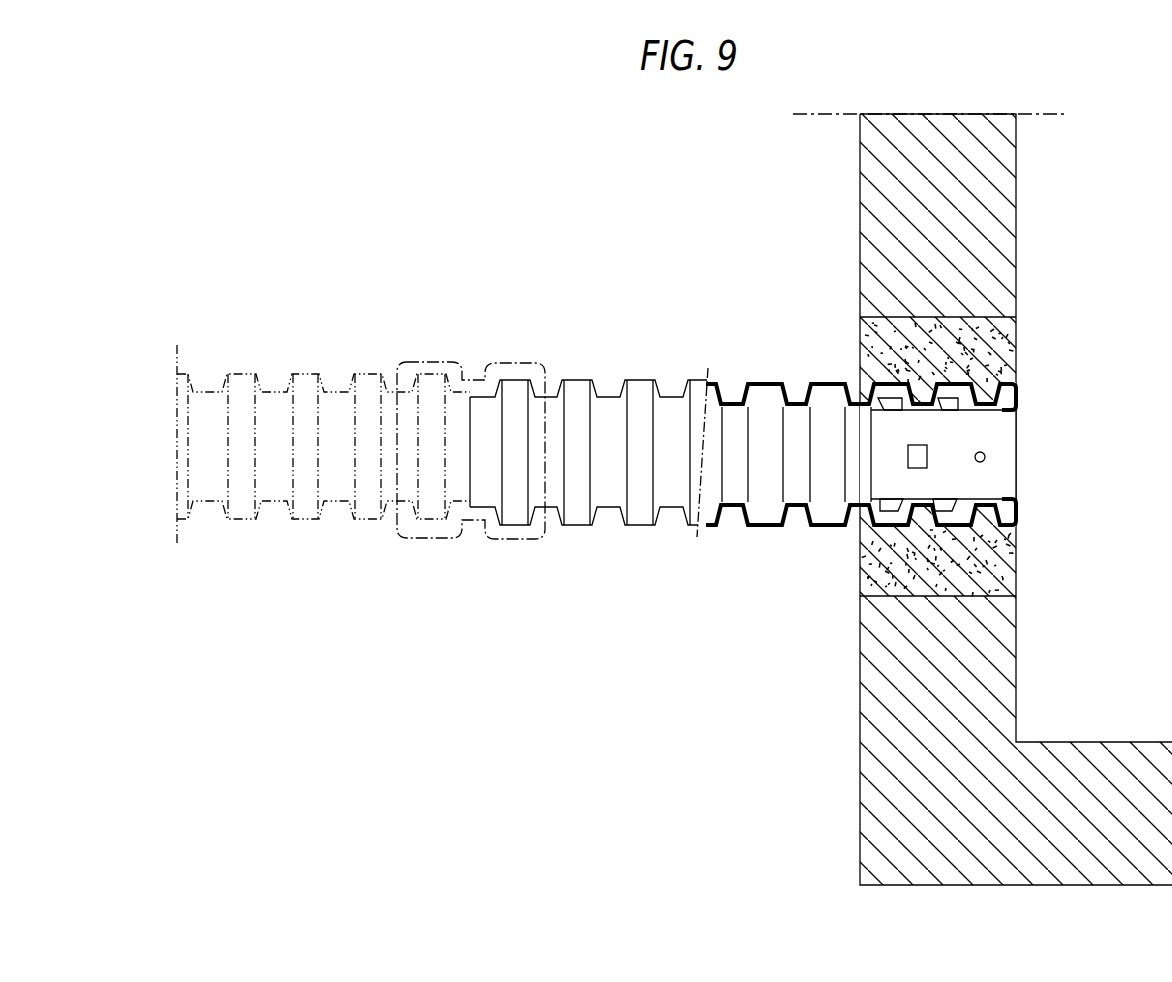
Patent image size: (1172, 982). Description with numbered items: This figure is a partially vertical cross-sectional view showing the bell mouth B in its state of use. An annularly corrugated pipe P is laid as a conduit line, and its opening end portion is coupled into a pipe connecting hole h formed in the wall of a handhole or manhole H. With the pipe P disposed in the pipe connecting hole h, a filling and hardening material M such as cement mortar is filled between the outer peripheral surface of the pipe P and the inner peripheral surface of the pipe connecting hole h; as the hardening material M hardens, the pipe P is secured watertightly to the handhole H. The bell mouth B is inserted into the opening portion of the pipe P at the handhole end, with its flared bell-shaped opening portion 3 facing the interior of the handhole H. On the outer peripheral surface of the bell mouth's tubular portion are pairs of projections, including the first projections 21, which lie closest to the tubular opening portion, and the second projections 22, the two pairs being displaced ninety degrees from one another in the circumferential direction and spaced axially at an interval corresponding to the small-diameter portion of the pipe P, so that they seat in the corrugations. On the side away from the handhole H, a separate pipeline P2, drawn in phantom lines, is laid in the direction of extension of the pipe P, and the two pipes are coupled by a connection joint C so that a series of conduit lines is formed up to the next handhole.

The handhole H is at (1060, 177).
The pipe connecting hole h is at (1016, 333).
The filling and hardening material M is at (860, 331).
The annularly corrugated pipe P is at (606, 340).
The separate pipeline P2 is at (302, 385).
The connection joint C is at (437, 370).
The bell-shaped opening portion 3 is at (1007, 427).
The bell mouth B is at (1030, 452).
The second projections 22 is at (918, 457).
The first projections 21 is at (887, 498).